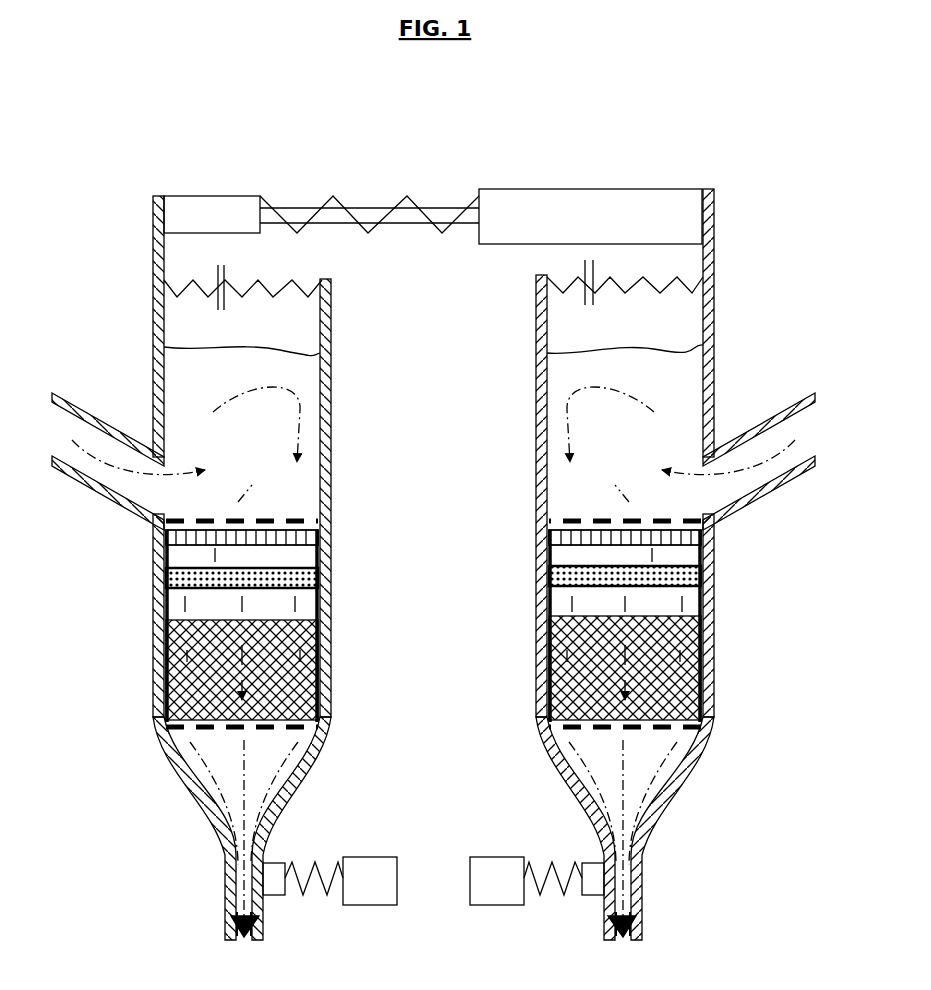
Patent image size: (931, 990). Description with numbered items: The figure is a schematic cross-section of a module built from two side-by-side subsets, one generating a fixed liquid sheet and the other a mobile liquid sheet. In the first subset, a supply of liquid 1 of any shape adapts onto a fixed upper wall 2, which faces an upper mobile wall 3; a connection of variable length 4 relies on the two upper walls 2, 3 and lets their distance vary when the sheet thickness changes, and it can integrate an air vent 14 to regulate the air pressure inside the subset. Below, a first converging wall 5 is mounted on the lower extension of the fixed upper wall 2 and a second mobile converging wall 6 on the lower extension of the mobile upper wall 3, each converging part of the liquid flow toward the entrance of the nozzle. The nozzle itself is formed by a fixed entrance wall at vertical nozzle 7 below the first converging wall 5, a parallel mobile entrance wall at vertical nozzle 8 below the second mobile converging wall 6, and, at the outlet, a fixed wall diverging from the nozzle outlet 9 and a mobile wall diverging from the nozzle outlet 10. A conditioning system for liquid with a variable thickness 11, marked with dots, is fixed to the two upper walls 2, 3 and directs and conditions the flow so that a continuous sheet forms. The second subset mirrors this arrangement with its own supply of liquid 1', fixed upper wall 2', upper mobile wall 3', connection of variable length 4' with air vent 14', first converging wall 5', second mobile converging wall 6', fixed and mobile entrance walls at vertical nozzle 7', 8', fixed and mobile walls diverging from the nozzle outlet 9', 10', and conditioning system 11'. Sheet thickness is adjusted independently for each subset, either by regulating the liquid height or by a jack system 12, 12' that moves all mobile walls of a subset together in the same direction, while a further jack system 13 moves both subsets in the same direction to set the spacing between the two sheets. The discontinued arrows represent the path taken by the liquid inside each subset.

The supply of liquid 1 is at (107, 425).
The supply of liquid 1' is at (768, 418).
The fixed upper wall 2 is at (113, 456).
The fixed upper wall 2' is at (757, 453).
The upper mobile wall 3 is at (374, 498).
The upper mobile wall 3' is at (497, 496).
The connection of variable length 4 is at (275, 270).
The connection of variable length 4' is at (682, 260).
The first converging wall 5 is at (157, 828).
The first converging wall 5' is at (704, 828).
The second mobile converging wall 6 is at (324, 828).
The second mobile converging wall 6' is at (541, 828).
The fixed entrance wall at vertical nozzle 7 is at (198, 832).
The fixed entrance wall at vertical nozzle 7' is at (667, 832).
The mobile entrance wall at vertical nozzle 8 is at (317, 849).
The mobile entrance wall at vertical nozzle 8' is at (547, 850).
The fixed wall diverging from the nozzle outlet 9 is at (169, 942).
The fixed wall diverging from nozzle outlet 9' is at (697, 941).
The mobile wall diverging from the nozzle outlet 10 is at (321, 941).
The mobile wall diverging from nozzle outlet 10' is at (547, 939).
The conditioning system for liquid with a variable thickness 11 is at (292, 624).
The conditioning system for liquid with a variable thickness 11' is at (567, 624).
The jack system 12 is at (378, 841).
The jack system 12' is at (479, 841).
The jack system 13 is at (580, 214).
The air vent 14 is at (265, 273).
The air vent 14' is at (542, 276).